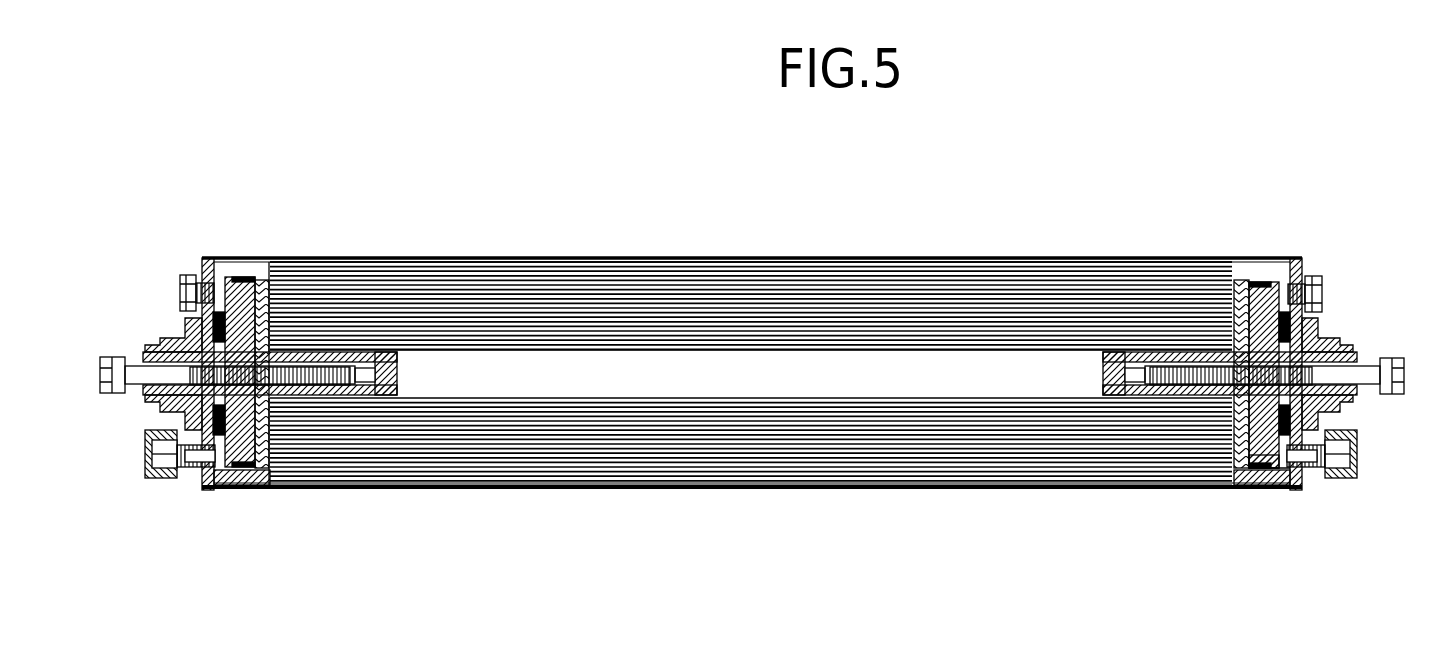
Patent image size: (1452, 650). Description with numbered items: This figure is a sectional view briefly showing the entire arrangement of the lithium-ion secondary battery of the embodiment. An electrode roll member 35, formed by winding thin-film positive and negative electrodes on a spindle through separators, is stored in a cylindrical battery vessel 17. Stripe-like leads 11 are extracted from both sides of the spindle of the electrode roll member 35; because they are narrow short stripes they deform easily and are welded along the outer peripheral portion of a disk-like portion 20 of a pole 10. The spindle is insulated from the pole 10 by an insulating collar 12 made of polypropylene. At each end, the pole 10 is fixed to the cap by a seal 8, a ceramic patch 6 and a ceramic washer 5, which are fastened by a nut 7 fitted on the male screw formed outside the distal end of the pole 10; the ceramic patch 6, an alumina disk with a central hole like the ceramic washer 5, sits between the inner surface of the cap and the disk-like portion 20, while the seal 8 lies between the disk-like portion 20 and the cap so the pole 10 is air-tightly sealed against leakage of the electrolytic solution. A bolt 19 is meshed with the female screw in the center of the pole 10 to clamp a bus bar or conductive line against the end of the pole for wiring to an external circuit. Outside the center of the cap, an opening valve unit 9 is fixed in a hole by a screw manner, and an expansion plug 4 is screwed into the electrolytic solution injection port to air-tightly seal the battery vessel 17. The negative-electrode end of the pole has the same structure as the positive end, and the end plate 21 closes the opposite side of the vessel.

The expansion plug 4 is at (1314, 280).
The ceramic washer 5 is at (1296, 326).
The ceramic patch 6 is at (1330, 413).
The nut 7 is at (1342, 340).
The seal 8 is at (1270, 470).
The opening valve unit 9 is at (1345, 482).
The pole 10 is at (1357, 398).
The stripe-like lead 11 is at (1240, 290).
The insulating collar 12 is at (1254, 284).
The battery vessel 17 is at (880, 262).
The bolt 19 is at (1396, 362).
The disk-like portion 20 is at (1235, 498).
The left end plate 21 is at (247, 493).
The electrode roll member 35 is at (398, 274).